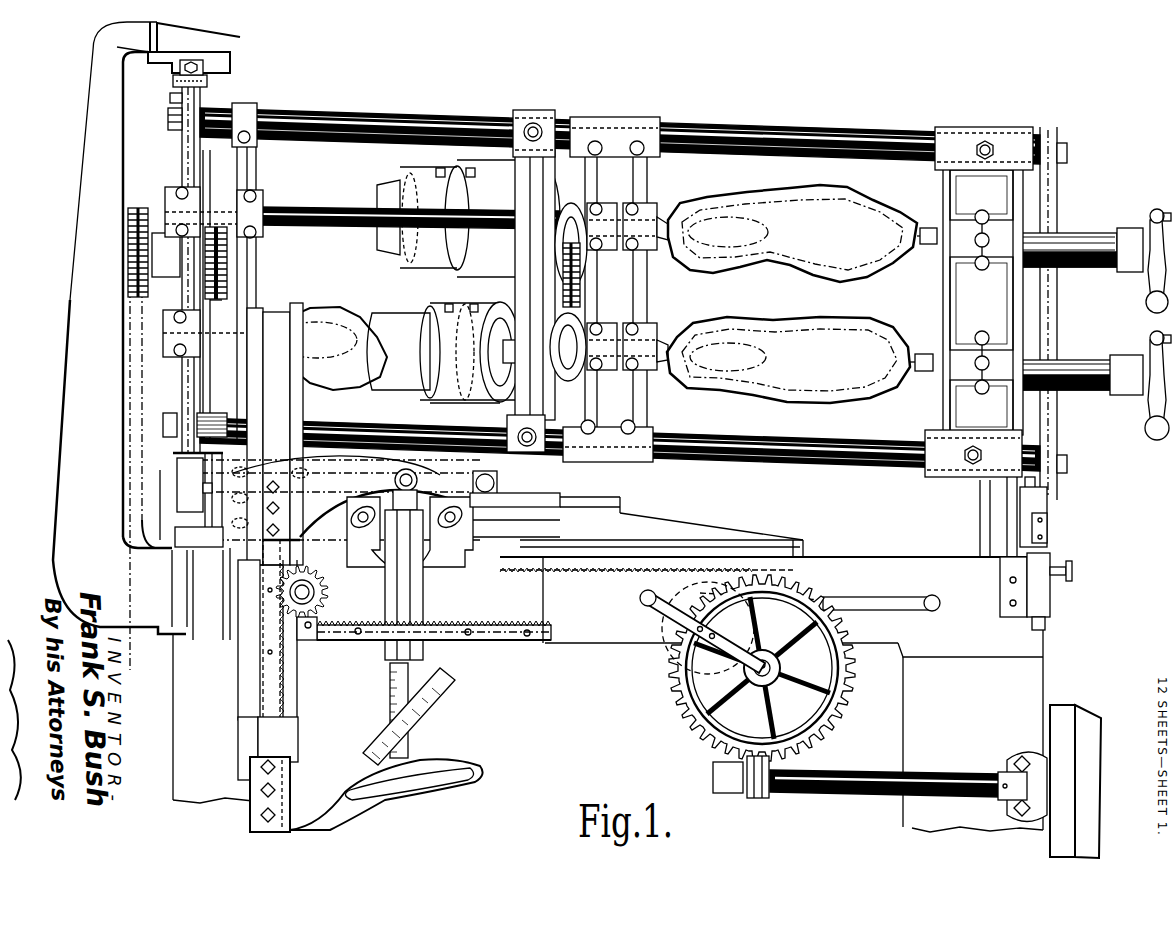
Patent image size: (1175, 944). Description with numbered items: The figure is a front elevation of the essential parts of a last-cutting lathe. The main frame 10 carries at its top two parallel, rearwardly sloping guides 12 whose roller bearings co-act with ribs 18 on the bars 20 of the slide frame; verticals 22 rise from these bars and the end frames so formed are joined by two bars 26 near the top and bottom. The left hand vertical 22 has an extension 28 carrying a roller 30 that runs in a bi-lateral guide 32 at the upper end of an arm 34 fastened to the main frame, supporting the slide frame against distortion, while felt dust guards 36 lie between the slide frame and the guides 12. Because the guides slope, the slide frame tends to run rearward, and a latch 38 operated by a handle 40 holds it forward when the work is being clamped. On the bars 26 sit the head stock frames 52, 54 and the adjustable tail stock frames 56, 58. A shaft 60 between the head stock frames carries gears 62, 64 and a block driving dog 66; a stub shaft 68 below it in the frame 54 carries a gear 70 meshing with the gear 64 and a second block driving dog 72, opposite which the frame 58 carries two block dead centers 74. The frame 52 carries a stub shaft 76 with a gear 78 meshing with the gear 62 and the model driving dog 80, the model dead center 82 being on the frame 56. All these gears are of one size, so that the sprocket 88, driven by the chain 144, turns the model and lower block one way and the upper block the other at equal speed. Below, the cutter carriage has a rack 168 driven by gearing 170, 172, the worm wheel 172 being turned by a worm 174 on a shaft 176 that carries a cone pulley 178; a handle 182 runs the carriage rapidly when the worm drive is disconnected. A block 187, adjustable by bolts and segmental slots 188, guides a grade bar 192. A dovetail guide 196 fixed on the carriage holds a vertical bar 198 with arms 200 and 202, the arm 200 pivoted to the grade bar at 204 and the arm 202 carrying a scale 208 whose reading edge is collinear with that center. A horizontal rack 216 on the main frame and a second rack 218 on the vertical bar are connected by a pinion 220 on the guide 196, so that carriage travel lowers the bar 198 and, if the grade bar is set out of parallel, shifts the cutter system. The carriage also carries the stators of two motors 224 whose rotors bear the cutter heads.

The main frame 10 is at (970, 726).
The guides 12 is at (210, 530).
The ribs 18 is at (203, 488).
The bars 20 is at (190, 504).
The verticals 22 is at (180, 380).
The bars 26 is at (822, 137).
The extension 28 is at (201, 96).
The roller 30 is at (210, 74).
The guide 32 is at (200, 58).
The arm 34 is at (92, 200).
The dust guards 36 is at (195, 522).
The latch 38 is at (1046, 547).
The handle 40 is at (1072, 572).
The head stock frame 52 is at (247, 160).
The head stock frame 54 is at (640, 173).
The tail stock frame 56 is at (520, 120).
The tail stock frame 58 is at (1007, 200).
The shaft 60 is at (321, 210).
The gear 62 is at (226, 228).
The gear 64 is at (617, 258).
The block driving dog 66 is at (690, 205).
The stub shaft 68 is at (605, 372).
The gear 70 is at (582, 292).
The block driving dog 72 is at (678, 325).
The block dead centers 74 is at (927, 245).
The stub shaft 76 is at (200, 342).
The gear 78 is at (222, 286).
The model driving dog 80 is at (300, 312).
The model dead center 82 is at (480, 392).
The sprocket 88 is at (138, 210).
The chain 144 is at (133, 413).
The rack 168 is at (604, 575).
The gearing 170 is at (665, 634).
The worm wheel 172 is at (690, 720).
The worm 174 is at (762, 798).
The shaft 176 is at (862, 797).
The cone pulley 178 is at (1065, 771).
The handle 182 is at (880, 610).
The block 187 is at (440, 568).
The bolts and segmental slots 188 is at (365, 567).
The grade bar 192 is at (423, 652).
The dovetail guide 196 is at (258, 626).
The vertical bar 198 is at (270, 746).
The arm 200 is at (365, 498).
The arm 202 is at (386, 800).
The pivot 204 is at (405, 468).
The scale 208 is at (392, 682).
The horizontal rack 216 is at (508, 630).
The rack 218 is at (265, 686).
The pinion 220 is at (280, 582).
The motors 224 is at (505, 185).